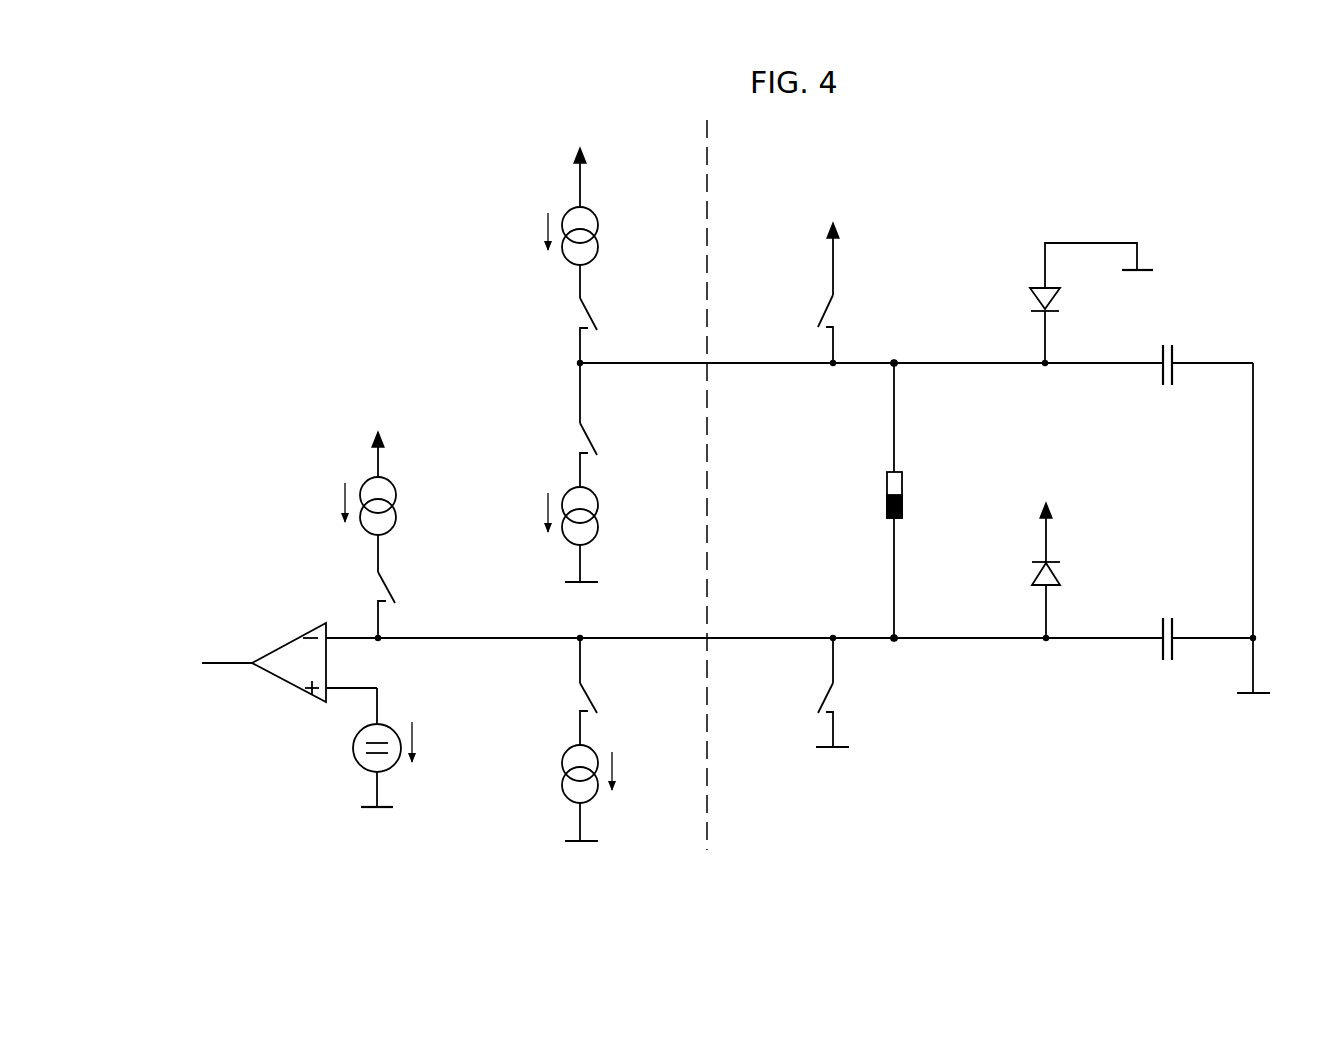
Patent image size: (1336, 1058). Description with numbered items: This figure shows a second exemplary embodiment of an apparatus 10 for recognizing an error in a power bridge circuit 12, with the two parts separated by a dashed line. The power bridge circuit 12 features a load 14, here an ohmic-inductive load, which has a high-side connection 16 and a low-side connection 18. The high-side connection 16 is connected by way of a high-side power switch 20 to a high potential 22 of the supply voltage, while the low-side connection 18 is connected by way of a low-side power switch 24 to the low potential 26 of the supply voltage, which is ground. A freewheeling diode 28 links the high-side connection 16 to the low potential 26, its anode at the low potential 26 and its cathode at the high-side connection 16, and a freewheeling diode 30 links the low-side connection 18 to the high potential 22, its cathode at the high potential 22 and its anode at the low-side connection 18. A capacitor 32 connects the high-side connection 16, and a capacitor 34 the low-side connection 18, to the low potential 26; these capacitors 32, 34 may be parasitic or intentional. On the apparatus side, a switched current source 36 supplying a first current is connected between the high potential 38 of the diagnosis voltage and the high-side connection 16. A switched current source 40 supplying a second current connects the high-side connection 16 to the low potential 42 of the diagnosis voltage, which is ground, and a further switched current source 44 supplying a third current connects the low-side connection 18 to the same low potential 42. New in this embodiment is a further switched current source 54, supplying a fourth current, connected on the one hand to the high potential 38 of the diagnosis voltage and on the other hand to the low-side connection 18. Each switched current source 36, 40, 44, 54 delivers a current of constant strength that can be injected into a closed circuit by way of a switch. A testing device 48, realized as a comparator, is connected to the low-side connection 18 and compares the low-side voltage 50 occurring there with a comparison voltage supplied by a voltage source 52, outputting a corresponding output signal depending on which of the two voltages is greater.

The apparatus 10 is at (272, 210).
The power bridge circuit 12 is at (975, 178).
The load 14 is at (887, 486).
The high-side connection 16 is at (897, 366).
The low-side connection 18 is at (898, 635).
The high-side power switch 20 is at (818, 312).
The high potential of the supply voltage 22 is at (827, 228).
The low-side power switch 24 is at (818, 699).
The low potential of the supply voltage 26 is at (1140, 268).
The freewheeling diode 28 is at (1030, 300).
The freewheeling diode 30 is at (1032, 578).
The capacitor 32 is at (1175, 350).
The capacitor 34 is at (1175, 625).
The switched current source 36 is at (547, 234).
The high potential of the diagnosis voltage 38 is at (575, 148).
The switched current source 40 is at (548, 452).
The low potential of the diagnosis voltage 42 is at (592, 584).
The switched current source 44 is at (548, 712).
The testing device 48 is at (283, 683).
The low-side voltage 50 is at (885, 632).
The voltage source 52 is at (350, 744).
The switched current source 54 is at (418, 550).